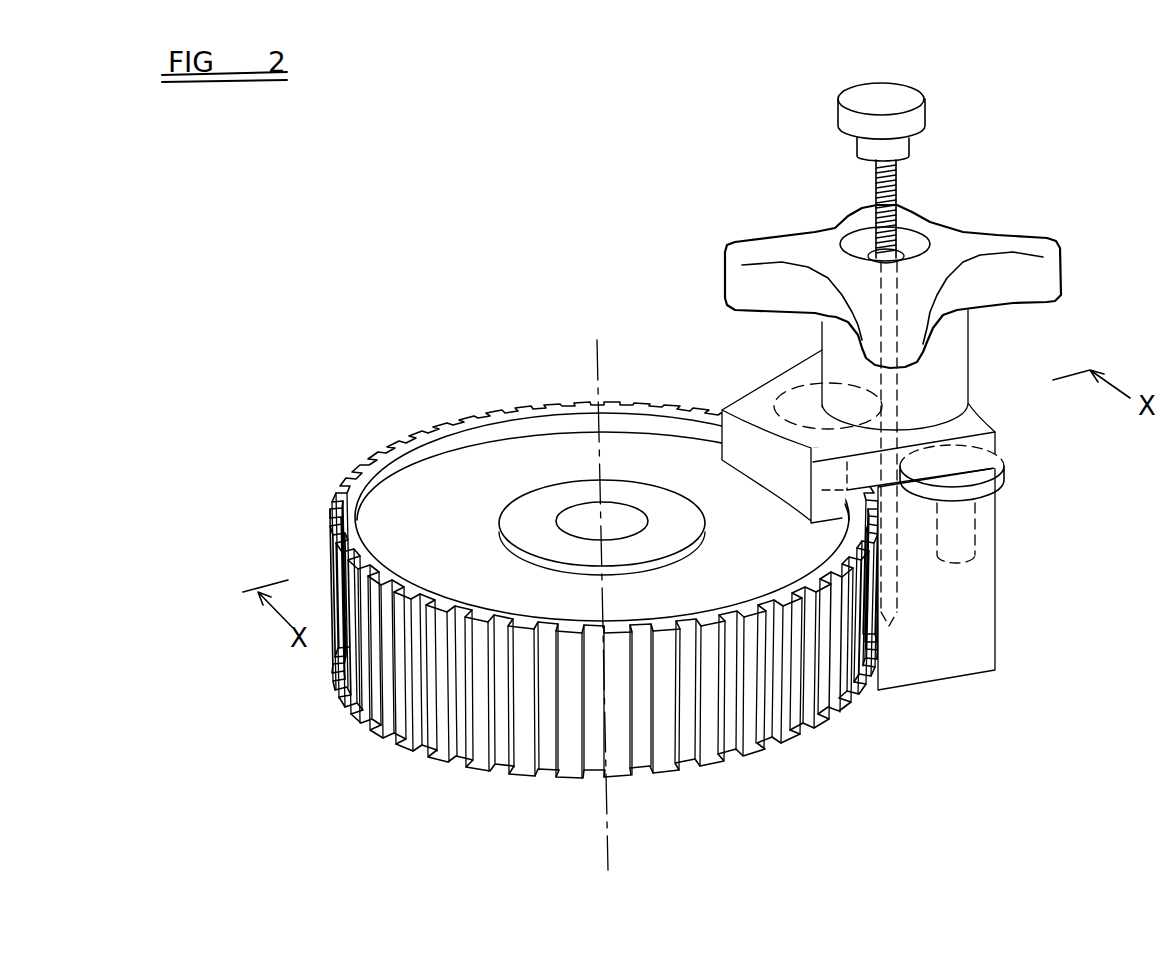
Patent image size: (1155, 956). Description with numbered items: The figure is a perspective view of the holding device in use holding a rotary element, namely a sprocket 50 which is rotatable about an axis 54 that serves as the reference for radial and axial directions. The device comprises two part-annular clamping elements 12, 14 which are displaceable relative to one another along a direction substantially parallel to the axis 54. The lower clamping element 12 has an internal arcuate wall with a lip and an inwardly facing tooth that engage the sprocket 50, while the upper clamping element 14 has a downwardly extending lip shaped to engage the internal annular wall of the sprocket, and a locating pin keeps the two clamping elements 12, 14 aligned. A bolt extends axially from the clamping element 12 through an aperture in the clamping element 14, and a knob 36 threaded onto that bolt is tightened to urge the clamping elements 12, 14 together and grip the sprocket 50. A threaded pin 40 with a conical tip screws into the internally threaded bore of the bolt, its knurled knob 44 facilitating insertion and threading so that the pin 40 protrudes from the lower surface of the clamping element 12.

The clamping element 12 is at (996, 607).
The clamping element 14 is at (1003, 437).
The knob 36 is at (1060, 268).
The threaded pin 40 is at (897, 193).
The knurled knob 44 is at (923, 117).
The sprocket 50 is at (365, 462).
The axis 54 is at (597, 383).